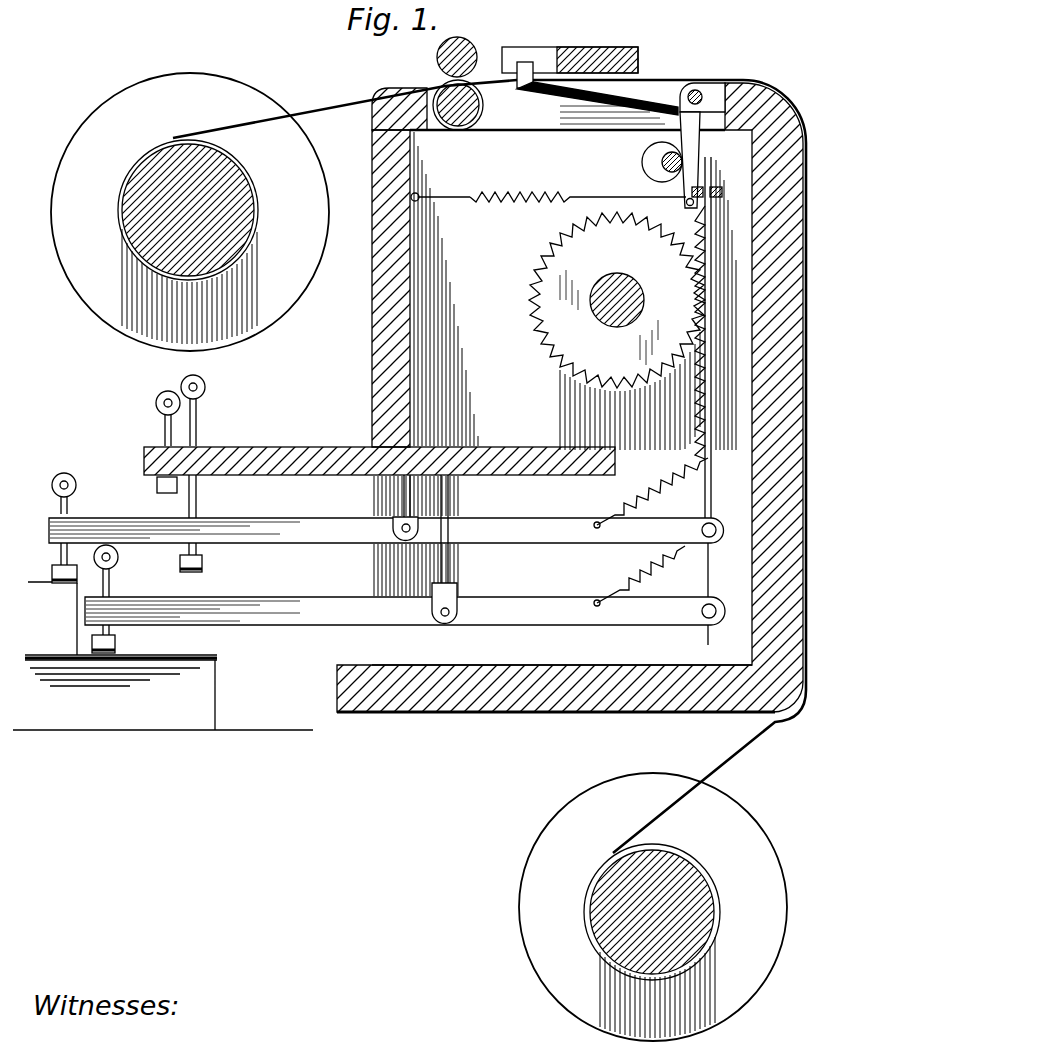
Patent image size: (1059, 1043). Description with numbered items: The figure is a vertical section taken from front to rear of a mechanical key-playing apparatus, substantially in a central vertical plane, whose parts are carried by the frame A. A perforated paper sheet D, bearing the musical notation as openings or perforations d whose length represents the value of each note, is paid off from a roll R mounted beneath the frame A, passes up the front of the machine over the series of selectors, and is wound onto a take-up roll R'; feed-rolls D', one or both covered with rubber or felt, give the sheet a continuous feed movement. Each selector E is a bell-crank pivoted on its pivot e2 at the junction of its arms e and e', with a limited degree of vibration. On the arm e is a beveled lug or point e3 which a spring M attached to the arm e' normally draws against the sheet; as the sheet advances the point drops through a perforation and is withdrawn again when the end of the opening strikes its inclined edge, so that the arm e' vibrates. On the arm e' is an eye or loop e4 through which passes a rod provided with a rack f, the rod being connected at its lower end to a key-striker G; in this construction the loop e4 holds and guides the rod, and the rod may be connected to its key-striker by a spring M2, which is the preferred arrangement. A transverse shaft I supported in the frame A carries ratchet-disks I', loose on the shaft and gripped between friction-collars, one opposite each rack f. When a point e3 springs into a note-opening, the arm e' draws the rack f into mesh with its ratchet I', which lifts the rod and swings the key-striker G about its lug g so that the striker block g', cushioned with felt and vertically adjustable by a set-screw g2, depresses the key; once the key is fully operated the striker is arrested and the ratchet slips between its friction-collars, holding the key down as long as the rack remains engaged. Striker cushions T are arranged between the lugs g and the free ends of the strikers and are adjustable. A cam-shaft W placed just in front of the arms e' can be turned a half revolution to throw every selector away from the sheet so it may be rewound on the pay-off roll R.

The frame A is at (672, 117).
The openings or perforations d is at (492, 108).
The paper sheet D is at (556, 398).
The feed-rolls D' is at (458, 120).
The lug or point e3 is at (570, 60).
The arm e is at (528, 92).
The selector E is at (597, 98).
The pivot e2 is at (702, 93).
The arm e' is at (707, 160).
The eye or loop e4 is at (718, 191).
The wheel H is at (655, 161).
The cam-shaft W is at (672, 163).
The spring M is at (525, 197).
The spring pivot m is at (420, 200).
The ratchet-disk I' is at (617, 331).
The transverse shaft I is at (617, 290).
The rack f is at (705, 300).
The connecting rod F' is at (720, 401).
The striker cushion T is at (379, 461).
The blocks T' is at (178, 526).
The set-screw g2 is at (118, 556).
The striker block g' is at (98, 607).
The key-striker or finger-bar G is at (387, 571).
The lug g is at (396, 549).
The spring M2 is at (651, 532).
The take-up roll R' is at (190, 212).
The pay-off roll R is at (653, 907).